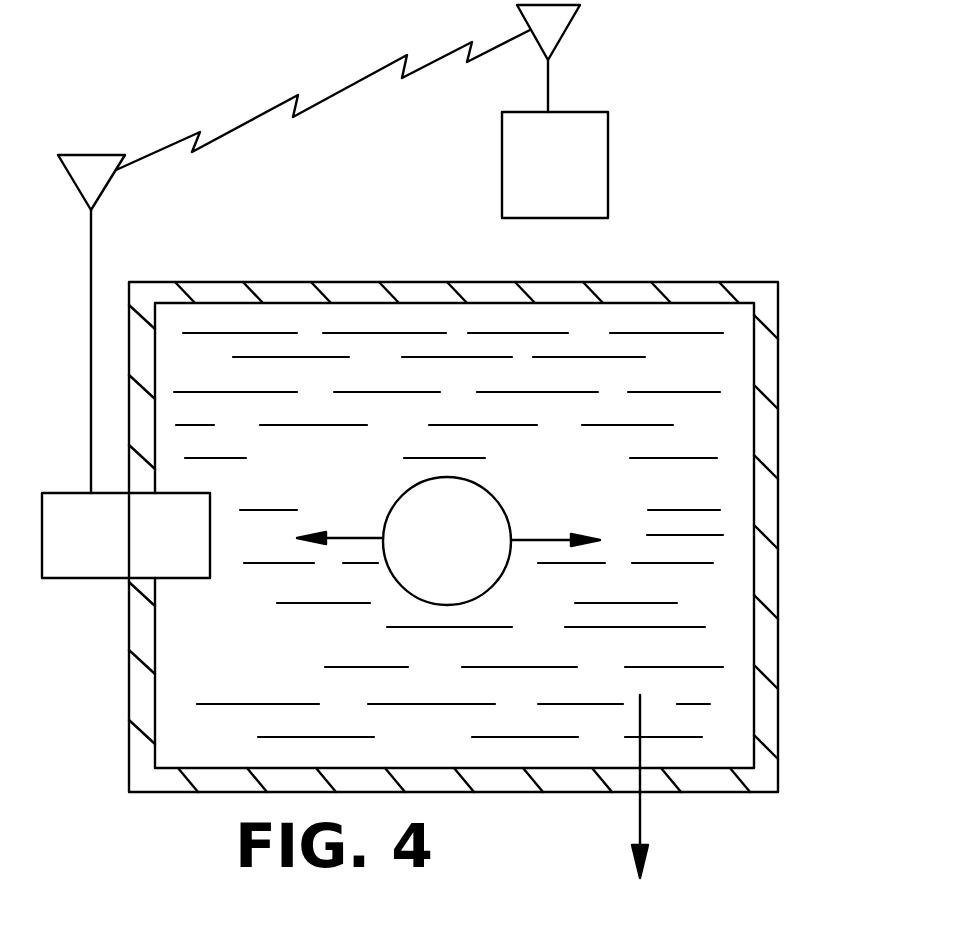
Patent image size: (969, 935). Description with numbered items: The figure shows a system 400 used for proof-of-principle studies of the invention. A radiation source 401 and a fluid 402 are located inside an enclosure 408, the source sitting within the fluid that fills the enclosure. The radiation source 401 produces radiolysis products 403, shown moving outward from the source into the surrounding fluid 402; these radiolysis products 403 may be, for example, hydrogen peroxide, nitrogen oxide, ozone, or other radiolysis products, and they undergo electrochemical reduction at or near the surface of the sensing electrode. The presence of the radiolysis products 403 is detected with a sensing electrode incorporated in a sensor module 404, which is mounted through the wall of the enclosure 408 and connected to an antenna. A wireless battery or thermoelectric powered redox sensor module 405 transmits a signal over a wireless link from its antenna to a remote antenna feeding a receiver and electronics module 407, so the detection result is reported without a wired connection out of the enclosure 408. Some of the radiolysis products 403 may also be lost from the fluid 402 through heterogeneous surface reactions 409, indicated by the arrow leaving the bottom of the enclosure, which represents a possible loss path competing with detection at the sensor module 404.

The system 400 is at (666, 84).
The radiation source 401 is at (478, 549).
The fluid 402 is at (667, 333).
The radiolysis products 403 is at (352, 538).
The sensor module 404 is at (262, 116).
The redox sensor module 405 is at (90, 580).
The receiver and electronics module 407 is at (580, 186).
The enclosure 408 is at (778, 422).
The heterogeneous surface reactions 409 is at (642, 833).